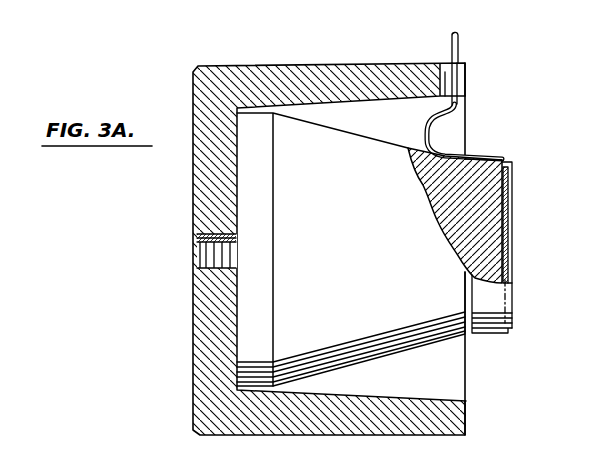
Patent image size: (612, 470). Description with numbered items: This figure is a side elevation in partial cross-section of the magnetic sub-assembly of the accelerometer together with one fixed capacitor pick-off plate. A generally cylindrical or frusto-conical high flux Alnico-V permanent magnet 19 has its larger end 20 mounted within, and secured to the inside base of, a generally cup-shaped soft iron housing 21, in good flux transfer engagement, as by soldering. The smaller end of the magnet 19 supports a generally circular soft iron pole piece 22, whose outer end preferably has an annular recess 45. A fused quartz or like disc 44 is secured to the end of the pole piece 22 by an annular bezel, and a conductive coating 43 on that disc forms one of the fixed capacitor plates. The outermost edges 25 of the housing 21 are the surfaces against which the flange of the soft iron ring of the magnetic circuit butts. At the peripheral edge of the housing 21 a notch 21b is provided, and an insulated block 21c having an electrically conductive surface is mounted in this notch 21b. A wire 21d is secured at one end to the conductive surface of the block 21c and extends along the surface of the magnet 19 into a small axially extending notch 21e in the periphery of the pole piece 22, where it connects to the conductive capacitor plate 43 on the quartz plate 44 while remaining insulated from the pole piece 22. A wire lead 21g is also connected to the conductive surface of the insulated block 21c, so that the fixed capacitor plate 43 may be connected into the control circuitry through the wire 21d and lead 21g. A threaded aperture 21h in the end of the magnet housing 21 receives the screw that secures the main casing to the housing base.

The permanent magnet 19 is at (360, 253).
The larger end of magnet 20 is at (236, 193).
The soft iron housing 21 is at (317, 80).
The notch 21b is at (459, 85).
The insulated block 21c is at (446, 76).
The wire 21d is at (431, 126).
The axially extending notch 21e is at (502, 171).
The wire lead 21g is at (458, 38).
The threaded aperture 21h is at (200, 243).
The pole piece 22 is at (492, 336).
The outermost edges of housing 25 is at (466, 72).
The conductive coating 43 is at (512, 202).
The quartz disc 44 is at (512, 218).
The annular recess 45 is at (513, 284).